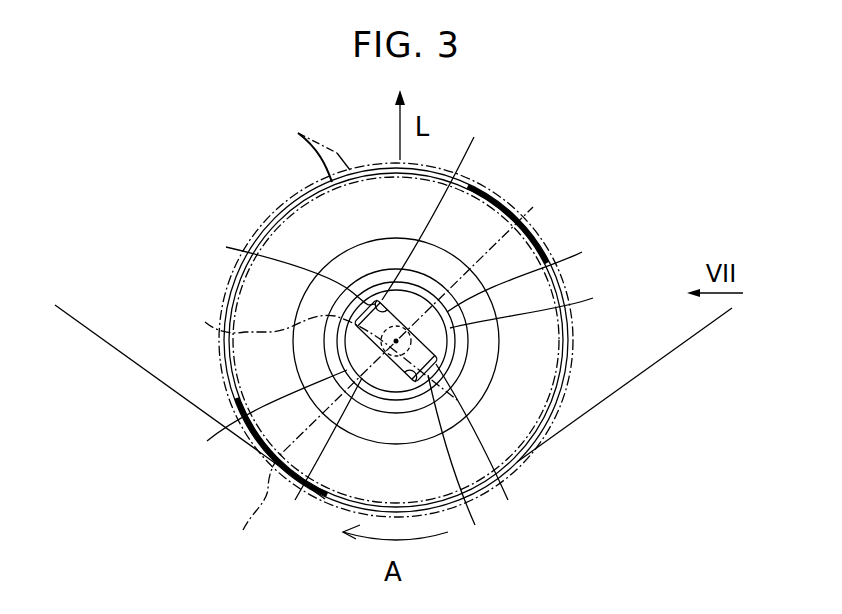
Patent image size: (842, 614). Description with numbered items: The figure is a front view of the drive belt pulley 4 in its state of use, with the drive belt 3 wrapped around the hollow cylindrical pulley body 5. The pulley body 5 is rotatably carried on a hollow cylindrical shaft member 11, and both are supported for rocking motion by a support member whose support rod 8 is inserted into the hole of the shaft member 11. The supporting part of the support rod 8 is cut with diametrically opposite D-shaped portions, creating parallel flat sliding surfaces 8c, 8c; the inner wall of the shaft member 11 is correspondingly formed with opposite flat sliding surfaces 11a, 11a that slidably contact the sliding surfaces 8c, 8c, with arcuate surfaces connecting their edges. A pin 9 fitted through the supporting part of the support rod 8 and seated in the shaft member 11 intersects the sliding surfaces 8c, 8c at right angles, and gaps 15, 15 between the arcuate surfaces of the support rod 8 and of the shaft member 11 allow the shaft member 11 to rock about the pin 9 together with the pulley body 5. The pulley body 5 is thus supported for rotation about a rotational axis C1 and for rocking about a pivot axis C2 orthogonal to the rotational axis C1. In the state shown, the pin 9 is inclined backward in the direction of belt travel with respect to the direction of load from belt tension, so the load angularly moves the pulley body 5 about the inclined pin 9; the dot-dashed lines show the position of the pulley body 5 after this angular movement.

The drive belt 3 is at (653, 367).
The pulley 4 is at (547, 211).
The pulley body 5 is at (313, 144).
The support rod 8 is at (308, 490).
The sliding surfaces 8c is at (404, 380).
The pin 9 is at (432, 300).
The shaft member 11 is at (457, 365).
The sliding surfaces 11a is at (447, 336).
The gaps 15 is at (366, 375).
The rotational axis C1 is at (313, 354).
The pivot axis C2 is at (376, 385).